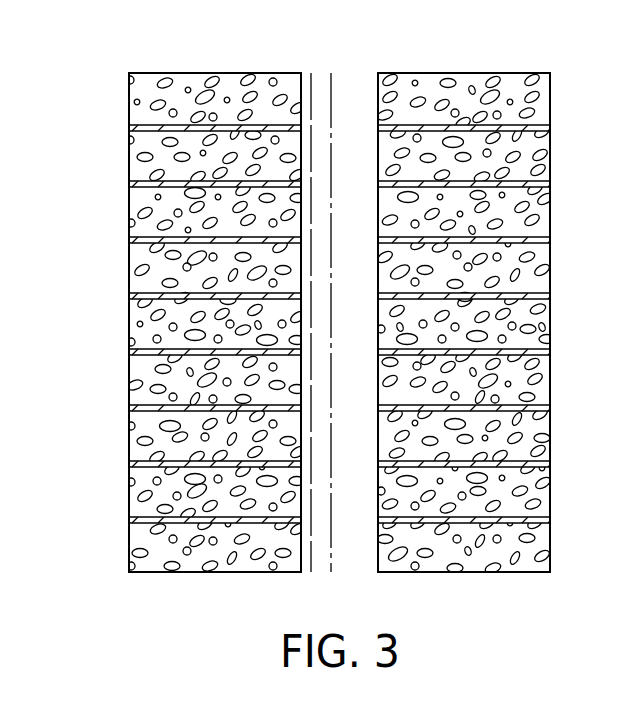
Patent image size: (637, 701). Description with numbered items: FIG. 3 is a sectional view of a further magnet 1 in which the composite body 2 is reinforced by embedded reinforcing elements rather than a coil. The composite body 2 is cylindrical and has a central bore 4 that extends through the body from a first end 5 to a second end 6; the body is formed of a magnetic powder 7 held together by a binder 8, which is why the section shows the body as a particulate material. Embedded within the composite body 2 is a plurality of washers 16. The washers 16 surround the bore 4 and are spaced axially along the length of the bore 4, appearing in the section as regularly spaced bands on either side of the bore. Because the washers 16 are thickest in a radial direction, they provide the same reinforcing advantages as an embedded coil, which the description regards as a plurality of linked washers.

The magnet 1 is at (90, 111).
The composite body 2 is at (215, 378).
The central bore 4 is at (332, 343).
The first end 5 is at (205, 73).
The second end 6 is at (202, 572).
The magnetic powder 7 is at (514, 153).
The binder 8 is at (545, 214).
The washers 16 is at (527, 356).